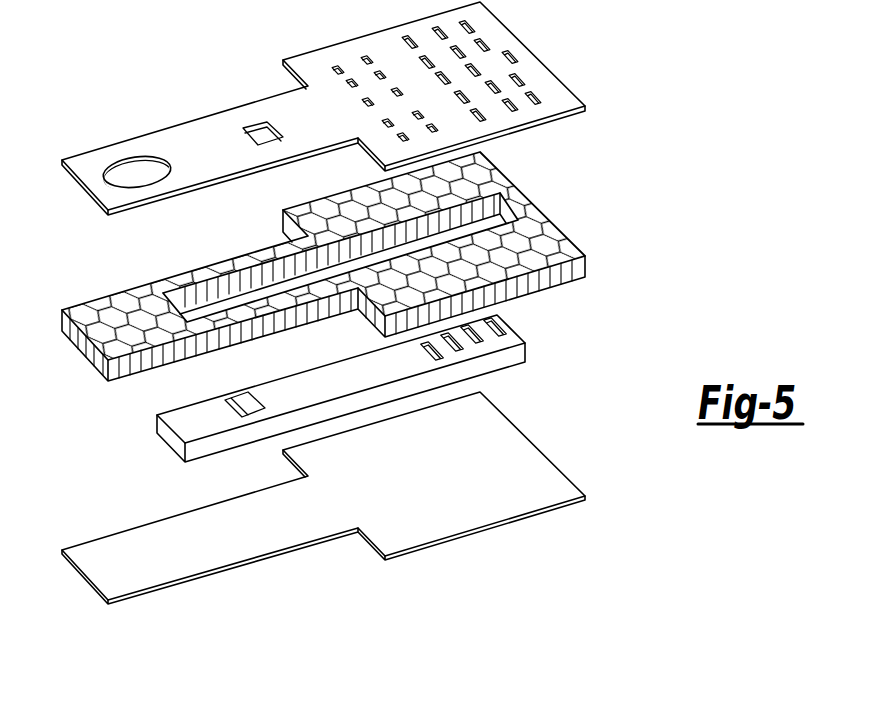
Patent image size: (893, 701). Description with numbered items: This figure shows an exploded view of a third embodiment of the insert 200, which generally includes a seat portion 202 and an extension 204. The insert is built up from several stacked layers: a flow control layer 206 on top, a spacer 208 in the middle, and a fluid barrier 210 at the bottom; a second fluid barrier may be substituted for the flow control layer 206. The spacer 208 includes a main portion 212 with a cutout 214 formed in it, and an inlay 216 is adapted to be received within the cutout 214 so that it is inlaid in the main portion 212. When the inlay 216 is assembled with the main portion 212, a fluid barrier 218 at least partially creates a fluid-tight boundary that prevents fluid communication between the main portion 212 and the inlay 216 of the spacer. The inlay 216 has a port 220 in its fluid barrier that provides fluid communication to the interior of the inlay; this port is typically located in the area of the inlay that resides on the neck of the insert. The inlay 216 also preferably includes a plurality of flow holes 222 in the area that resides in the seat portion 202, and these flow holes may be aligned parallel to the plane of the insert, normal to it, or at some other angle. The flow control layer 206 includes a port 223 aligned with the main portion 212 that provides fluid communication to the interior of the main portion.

The insert 200 is at (137, 50).
The seat portion 202 is at (585, 510).
The extension 204 is at (383, 570).
The flow control layer 206 is at (325, 108).
The spacer 208 is at (628, 132).
The fluid barrier 210 is at (563, 487).
The main portion 212 is at (103, 320).
The cutout 214 is at (210, 312).
The inlay 216 is at (168, 438).
The fluid barrier 218 is at (292, 395).
The port 220 is at (240, 398).
The flow holes 222 is at (440, 358).
The port 223 is at (112, 160).